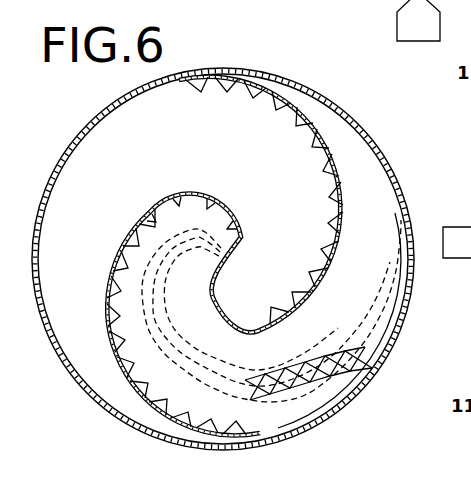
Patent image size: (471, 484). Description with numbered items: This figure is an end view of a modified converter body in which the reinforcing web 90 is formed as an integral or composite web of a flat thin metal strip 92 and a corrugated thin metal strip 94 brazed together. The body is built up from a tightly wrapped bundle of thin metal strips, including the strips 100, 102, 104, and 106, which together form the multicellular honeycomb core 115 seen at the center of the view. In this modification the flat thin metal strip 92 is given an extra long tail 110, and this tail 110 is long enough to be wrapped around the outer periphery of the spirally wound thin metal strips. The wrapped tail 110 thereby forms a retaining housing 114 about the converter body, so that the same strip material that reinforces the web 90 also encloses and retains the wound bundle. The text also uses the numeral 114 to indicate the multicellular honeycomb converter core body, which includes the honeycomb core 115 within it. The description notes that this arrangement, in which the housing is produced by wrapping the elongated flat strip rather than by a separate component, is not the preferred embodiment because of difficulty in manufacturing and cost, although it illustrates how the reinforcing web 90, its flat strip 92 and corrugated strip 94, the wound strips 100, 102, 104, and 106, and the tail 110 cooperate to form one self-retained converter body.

The reinforcing web 90 is at (333, 146).
The flat thin metal strip 92 is at (340, 225).
The corrugated thin metal strip 94 is at (331, 283).
The thin metal strip 100 is at (303, 375).
The thin metal strip 102 is at (280, 380).
The thin metal strip 104 is at (283, 393).
The thin metal strip 106 is at (348, 398).
The tail 110 is at (396, 353).
The retaining housing 114 is at (280, 61).
The honeycomb core 115 is at (173, 167).